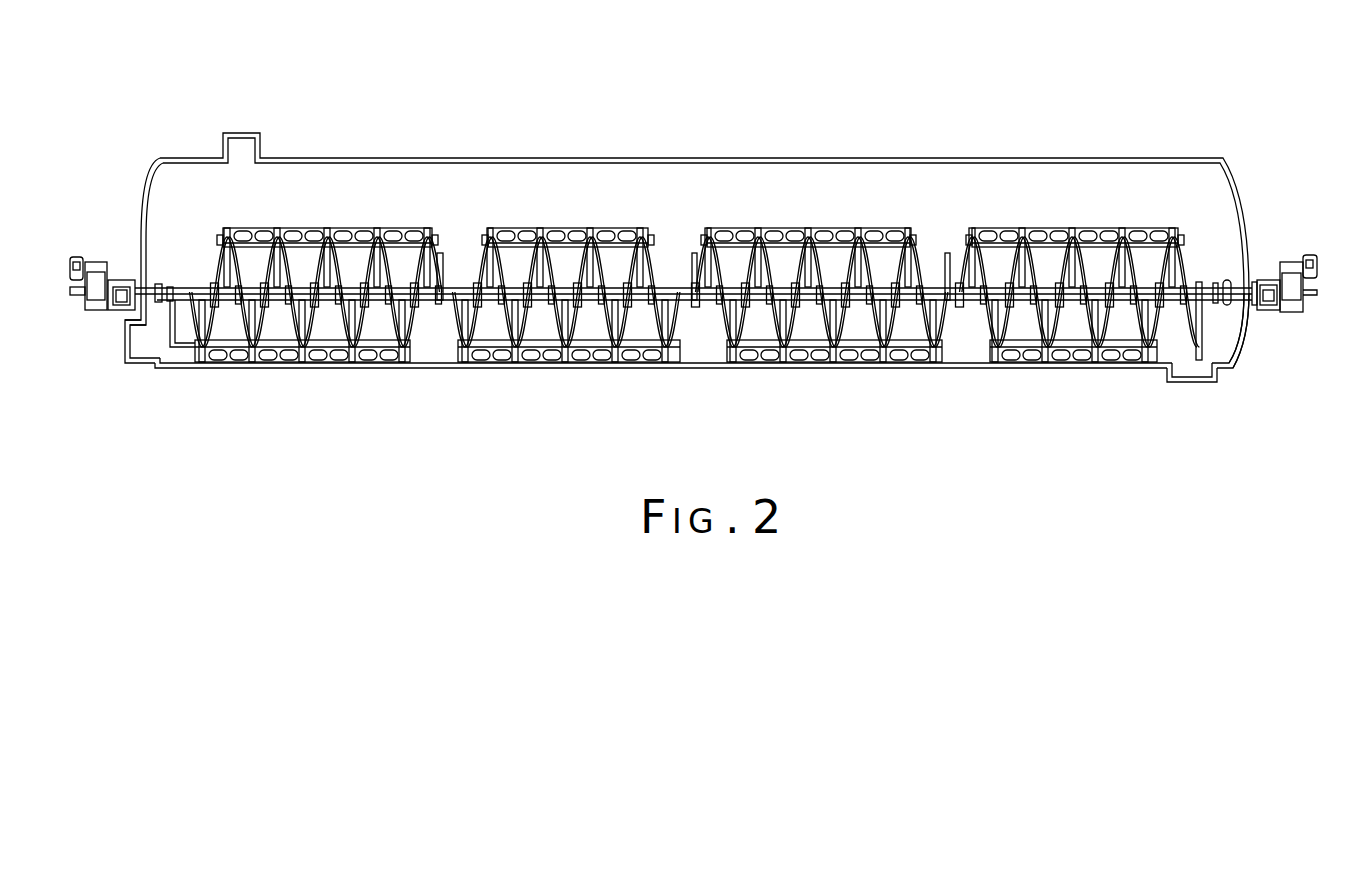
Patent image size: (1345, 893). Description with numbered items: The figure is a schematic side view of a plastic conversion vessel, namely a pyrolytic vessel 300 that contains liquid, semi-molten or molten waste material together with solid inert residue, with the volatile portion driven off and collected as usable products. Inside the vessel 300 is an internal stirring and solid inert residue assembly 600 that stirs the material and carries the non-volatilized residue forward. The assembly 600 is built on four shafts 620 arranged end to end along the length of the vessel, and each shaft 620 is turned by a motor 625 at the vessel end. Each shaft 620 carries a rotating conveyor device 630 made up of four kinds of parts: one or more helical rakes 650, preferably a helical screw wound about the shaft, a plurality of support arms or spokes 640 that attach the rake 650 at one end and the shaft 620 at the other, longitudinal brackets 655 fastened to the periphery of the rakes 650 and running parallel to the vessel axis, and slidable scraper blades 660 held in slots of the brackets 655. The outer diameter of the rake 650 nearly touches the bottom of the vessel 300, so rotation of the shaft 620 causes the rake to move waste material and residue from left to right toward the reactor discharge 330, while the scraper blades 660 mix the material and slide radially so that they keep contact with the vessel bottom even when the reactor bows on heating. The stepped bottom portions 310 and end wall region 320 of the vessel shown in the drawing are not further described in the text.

The pyrolytic vessel 300 is at (983, 158).
The vessel bottom outlet portion 310 is at (138, 338).
The vessel end wall 320 is at (1231, 319).
The reactor discharge 330 is at (1192, 384).
The stirring assembly 600 is at (695, 242).
The shaft 620 is at (512, 300).
The motor 625 is at (97, 232).
The rotating conveyor device 630 is at (249, 224).
The support arm or spoke 640 is at (293, 332).
The helical rake 650 is at (1041, 263).
The bracket 655 is at (419, 230).
The scraper blade 660 is at (355, 233).